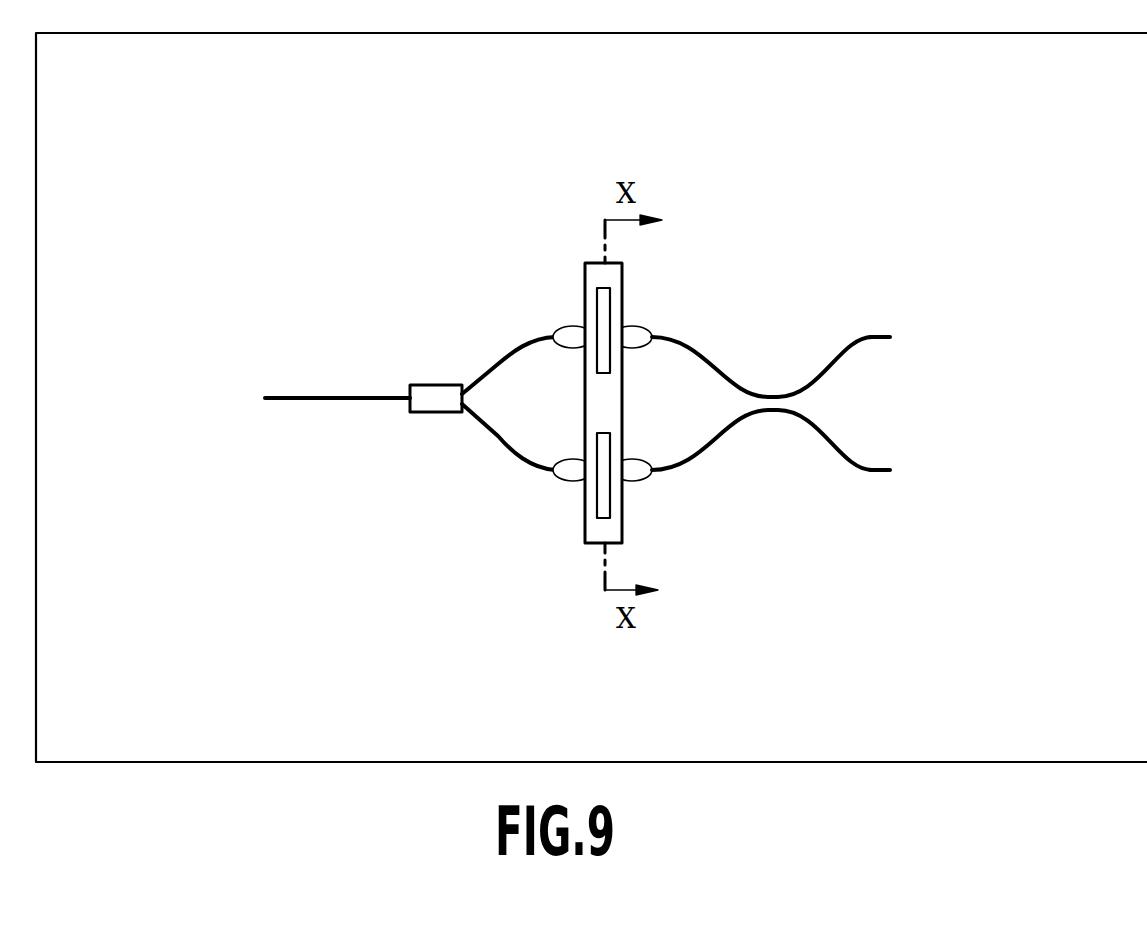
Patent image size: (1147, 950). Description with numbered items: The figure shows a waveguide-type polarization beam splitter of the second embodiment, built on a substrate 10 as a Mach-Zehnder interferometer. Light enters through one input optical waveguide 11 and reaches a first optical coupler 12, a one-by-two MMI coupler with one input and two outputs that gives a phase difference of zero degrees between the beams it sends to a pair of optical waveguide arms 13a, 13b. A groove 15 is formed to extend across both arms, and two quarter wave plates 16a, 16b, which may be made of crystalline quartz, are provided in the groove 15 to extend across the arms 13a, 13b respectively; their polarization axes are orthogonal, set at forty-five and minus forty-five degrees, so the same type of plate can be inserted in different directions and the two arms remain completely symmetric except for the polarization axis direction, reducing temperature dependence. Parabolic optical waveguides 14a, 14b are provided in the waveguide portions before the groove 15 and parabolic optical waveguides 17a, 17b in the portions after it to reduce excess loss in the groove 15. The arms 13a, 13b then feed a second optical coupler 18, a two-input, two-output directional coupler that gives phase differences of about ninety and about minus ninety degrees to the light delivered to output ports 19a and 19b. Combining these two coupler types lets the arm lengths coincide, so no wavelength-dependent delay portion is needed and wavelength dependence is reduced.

The substrate 10 is at (80, 762).
The input optical waveguide 11 is at (233, 394).
The first optical coupler 12 is at (435, 412).
The optical waveguide arm 13a is at (497, 365).
The optical waveguide arm 13b is at (507, 455).
The parabolic optical waveguide 14a is at (573, 332).
The parabolic optical waveguide 14b is at (573, 478).
The groove 15 is at (597, 543).
The quarter wave plate 16a is at (597, 290).
The quarter wave plate 16b is at (608, 516).
The parabolic optical waveguide 17a is at (637, 330).
The parabolic optical waveguide 17b is at (638, 473).
The second optical coupler 18 is at (777, 397).
The output port 19a is at (990, 338).
The output port 19b is at (907, 470).